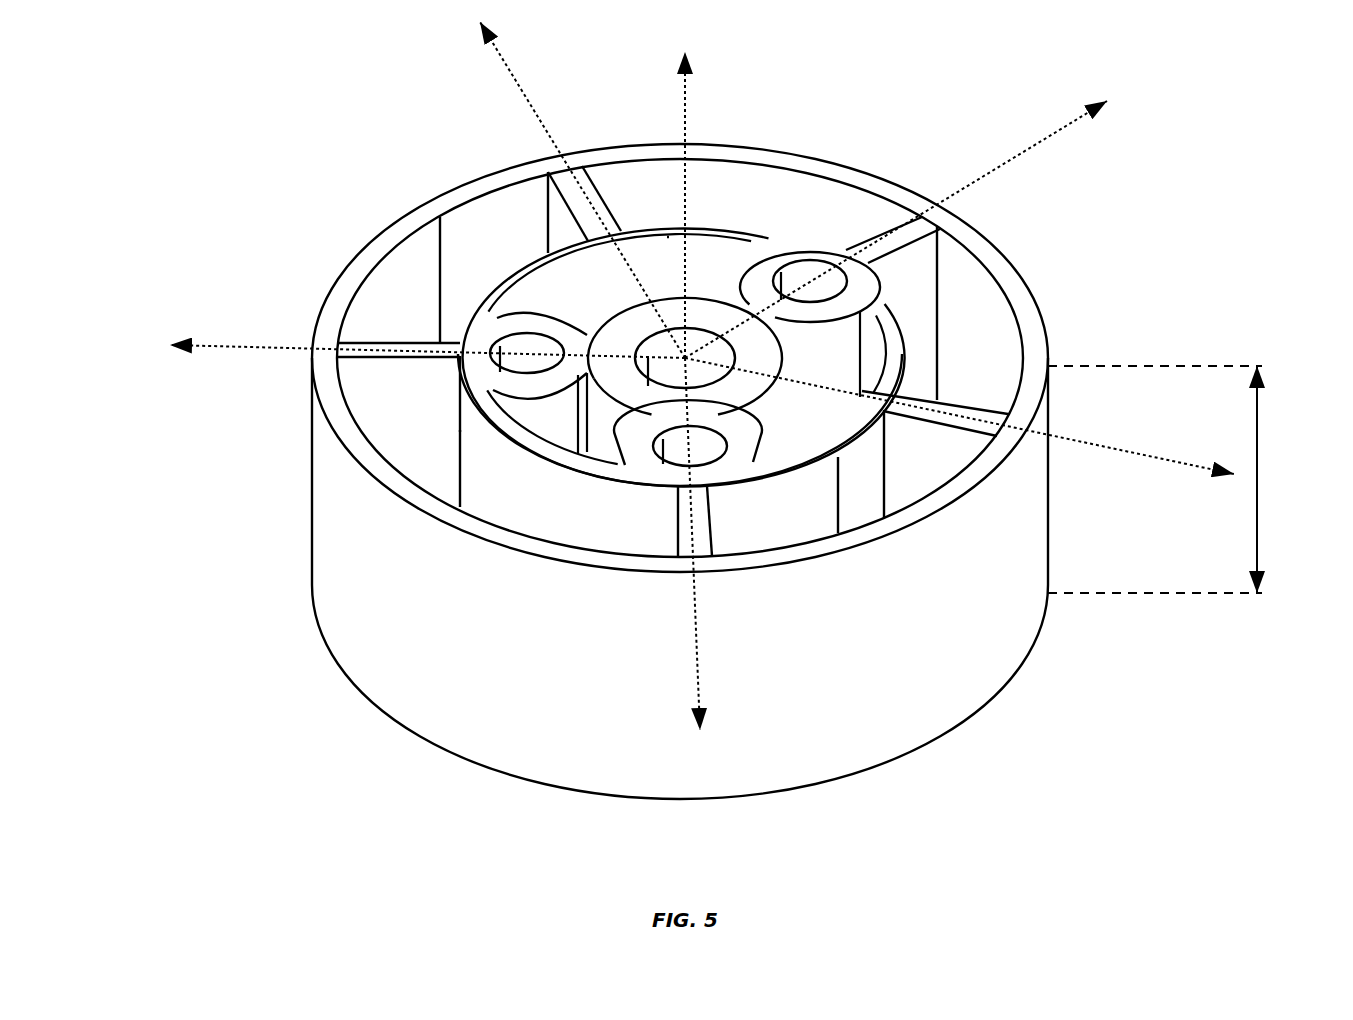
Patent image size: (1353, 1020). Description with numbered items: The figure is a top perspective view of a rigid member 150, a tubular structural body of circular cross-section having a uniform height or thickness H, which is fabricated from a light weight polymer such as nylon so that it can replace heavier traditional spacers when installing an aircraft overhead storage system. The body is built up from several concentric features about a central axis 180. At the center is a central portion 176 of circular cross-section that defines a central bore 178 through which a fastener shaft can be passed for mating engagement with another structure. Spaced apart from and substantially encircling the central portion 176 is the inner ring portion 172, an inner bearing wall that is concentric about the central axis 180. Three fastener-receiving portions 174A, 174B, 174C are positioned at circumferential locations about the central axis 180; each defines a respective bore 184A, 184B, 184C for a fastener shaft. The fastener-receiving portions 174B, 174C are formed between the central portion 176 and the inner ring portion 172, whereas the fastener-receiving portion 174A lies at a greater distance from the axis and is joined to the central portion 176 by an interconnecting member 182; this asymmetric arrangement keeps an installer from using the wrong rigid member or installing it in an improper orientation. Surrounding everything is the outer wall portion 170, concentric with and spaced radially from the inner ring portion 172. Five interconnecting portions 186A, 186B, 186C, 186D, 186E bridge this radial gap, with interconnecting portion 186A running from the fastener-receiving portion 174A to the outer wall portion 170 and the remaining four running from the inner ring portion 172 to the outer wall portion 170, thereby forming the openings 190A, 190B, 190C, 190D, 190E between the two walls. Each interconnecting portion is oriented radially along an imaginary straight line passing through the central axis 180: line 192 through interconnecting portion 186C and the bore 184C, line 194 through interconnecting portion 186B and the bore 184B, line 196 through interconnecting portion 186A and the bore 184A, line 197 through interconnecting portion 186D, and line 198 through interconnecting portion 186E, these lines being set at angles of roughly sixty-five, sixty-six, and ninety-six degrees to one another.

The rigid member 150 is at (1188, 173).
The outer wall portion 170 is at (976, 247).
The inner ring portion 172 is at (667, 237).
The fastener-receiving portion 174A is at (764, 275).
The fastener-receiving portion 174B is at (550, 327).
The fastener-receiving portion 174C is at (740, 452).
The central portion 176 is at (647, 318).
The central bore 178 is at (668, 378).
The interconnecting member 182 is at (752, 305).
The bore 184A is at (804, 279).
The bore 184B is at (531, 362).
The bore 184C is at (705, 455).
The interconnecting portion 186A is at (958, 222).
The interconnecting portion 186B is at (375, 357).
The interconnecting portion 186C is at (688, 528).
The interconnecting portion 186D is at (1005, 410).
The interconnecting portion 186E is at (586, 166).
The opening 190A is at (954, 351).
The opening 190B is at (909, 461).
The opening 190C is at (579, 536).
The opening 190D is at (469, 242).
The opening 190E is at (707, 204).
The central axis 180 is at (698, 102).
The imaginary straight line 192 is at (692, 682).
The imaginary straight line 194 is at (214, 350).
The imaginary straight line 196 is at (1084, 117).
The imaginary straight line 197 is at (1190, 466).
The imaginary straight line 198 is at (522, 64).
The height H is at (1156, 479).